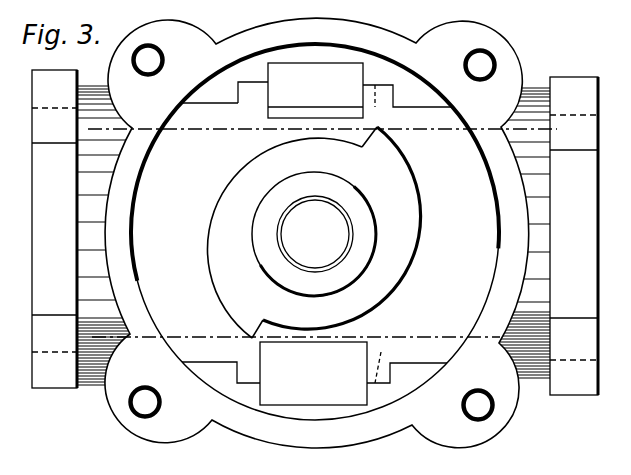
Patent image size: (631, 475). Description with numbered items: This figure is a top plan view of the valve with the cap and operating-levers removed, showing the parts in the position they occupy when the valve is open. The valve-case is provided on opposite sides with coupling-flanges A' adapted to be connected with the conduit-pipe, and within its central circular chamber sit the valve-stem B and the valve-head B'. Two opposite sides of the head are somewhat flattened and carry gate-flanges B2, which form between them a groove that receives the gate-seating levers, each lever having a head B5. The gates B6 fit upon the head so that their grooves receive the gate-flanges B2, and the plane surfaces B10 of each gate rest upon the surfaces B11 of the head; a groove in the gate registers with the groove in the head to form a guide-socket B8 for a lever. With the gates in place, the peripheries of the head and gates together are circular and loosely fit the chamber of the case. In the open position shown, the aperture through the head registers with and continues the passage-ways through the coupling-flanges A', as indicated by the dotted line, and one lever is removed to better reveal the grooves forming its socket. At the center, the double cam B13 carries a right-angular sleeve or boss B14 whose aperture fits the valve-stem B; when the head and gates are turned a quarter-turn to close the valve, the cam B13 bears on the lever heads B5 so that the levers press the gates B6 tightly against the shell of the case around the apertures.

The coupling-flanges A' is at (315, 232).
The valve-head B' is at (317, 233).
The valve-stem B is at (315, 234).
The gate-flanges B2 is at (384, 234).
The heads of gate-seating levers B5 is at (274, 373).
The gates B6 is at (407, 233).
The guide-socket B8 is at (315, 90).
The plane surfaces of the gate B10 is at (233, 90).
The surfaces of the head B11 is at (214, 116).
The double cam B13 is at (398, 167).
The right-angular sleeve or boss B14 is at (365, 227).